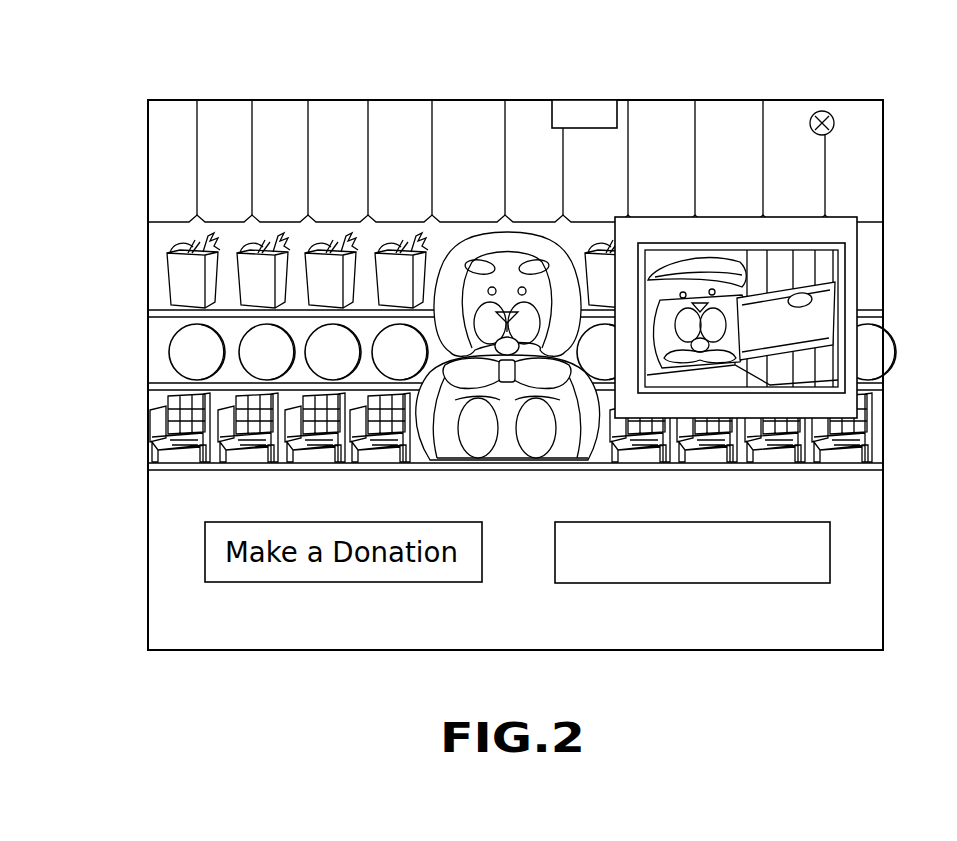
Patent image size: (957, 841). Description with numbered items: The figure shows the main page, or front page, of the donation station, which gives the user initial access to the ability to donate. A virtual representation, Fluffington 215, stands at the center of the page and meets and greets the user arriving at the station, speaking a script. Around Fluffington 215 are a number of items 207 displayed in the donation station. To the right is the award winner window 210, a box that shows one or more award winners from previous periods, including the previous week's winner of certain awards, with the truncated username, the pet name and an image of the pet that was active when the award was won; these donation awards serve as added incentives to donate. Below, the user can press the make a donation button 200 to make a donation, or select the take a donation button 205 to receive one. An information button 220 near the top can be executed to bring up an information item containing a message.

The make a donation button 200 is at (322, 577).
The take a donation button 205 is at (697, 580).
The items 207 is at (167, 285).
The award winner window 210 is at (732, 255).
The Fluffington 215 is at (490, 243).
The information button 220 is at (582, 100).